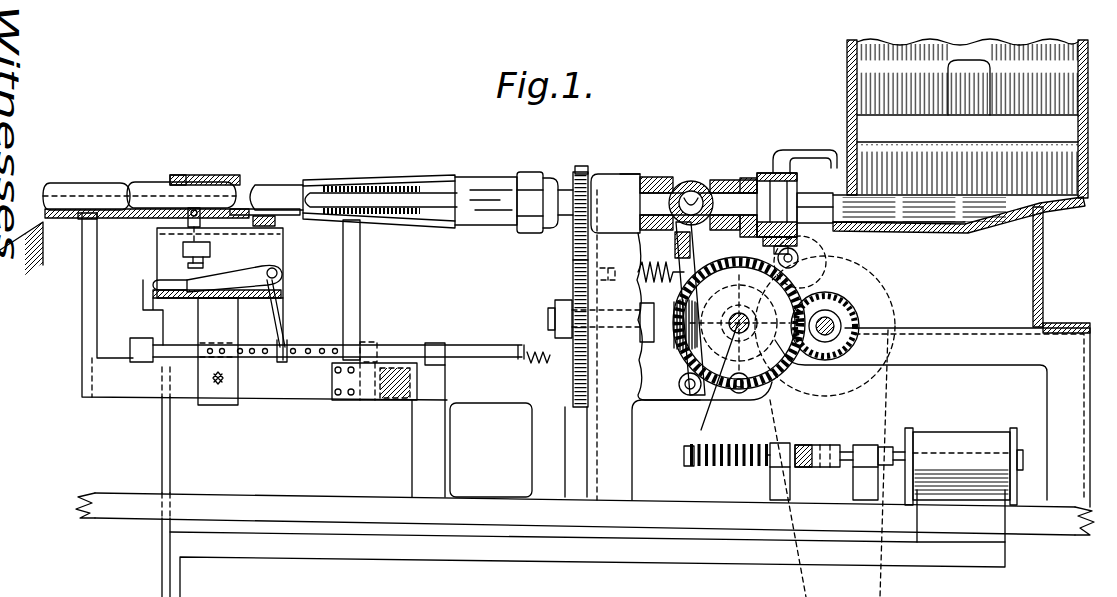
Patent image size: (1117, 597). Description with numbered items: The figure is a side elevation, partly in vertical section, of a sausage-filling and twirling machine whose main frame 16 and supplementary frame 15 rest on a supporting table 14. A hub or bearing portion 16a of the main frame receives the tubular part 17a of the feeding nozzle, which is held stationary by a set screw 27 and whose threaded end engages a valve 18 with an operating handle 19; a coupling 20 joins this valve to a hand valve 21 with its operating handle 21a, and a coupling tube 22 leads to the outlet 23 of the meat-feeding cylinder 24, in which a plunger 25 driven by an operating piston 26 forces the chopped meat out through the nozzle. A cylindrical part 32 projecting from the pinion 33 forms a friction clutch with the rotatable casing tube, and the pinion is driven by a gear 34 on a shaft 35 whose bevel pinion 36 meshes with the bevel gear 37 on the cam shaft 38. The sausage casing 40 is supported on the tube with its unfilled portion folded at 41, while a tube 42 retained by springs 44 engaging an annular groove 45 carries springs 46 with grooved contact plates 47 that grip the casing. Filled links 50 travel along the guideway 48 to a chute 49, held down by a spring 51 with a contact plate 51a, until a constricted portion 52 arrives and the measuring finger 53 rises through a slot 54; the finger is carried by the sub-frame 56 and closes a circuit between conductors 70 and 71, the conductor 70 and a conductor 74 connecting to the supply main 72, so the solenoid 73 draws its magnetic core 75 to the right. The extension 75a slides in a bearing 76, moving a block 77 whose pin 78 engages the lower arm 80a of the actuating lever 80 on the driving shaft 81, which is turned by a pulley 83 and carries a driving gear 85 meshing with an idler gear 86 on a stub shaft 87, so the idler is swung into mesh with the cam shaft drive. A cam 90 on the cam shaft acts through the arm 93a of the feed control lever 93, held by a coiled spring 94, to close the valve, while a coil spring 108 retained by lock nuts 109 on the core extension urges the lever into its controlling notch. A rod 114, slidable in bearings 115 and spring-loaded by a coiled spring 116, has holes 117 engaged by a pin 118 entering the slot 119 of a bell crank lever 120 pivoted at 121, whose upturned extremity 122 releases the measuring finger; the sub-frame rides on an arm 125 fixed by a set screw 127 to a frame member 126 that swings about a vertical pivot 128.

The supporting table 14 is at (330, 497).
The supplementary frame 15 is at (483, 404).
The main frame 16 is at (633, 402).
The hub or bearing portion 16a is at (617, 174).
The tubular part of the feeding tube 17a is at (660, 177).
The valve 18 is at (692, 181).
The operating handle 19 is at (693, 236).
The coupling 20 is at (735, 180).
The hand valve 21 is at (752, 178).
The operating handle 21a is at (800, 150).
The coupling tube 22 is at (797, 178).
The outlet 23 is at (843, 212).
The meat-feeding cylinder 24 is at (1092, 146).
The plunger 25 is at (1030, 130).
The operating piston 26 is at (985, 80).
The set screw 27 is at (632, 174).
The cylindrical part 32 is at (576, 166).
The pinion 33 is at (580, 172).
The gear 34 is at (573, 265).
The shaft 35 is at (555, 320).
The bevel pinion 36 is at (676, 336).
The bevel gear 37 is at (742, 393).
The cam shaft 38 is at (691, 396).
The sausage casing 40 is at (294, 186).
The folded portion of casing 41 is at (371, 188).
The tube 42 is at (481, 177).
The springs 44 is at (530, 172).
The annular groove 45 is at (560, 178).
The springs 46 is at (414, 198).
The contact plates 47 is at (322, 184).
The guideway 48 is at (112, 219).
The chute 49 is at (25, 250).
The sausage links 50 is at (175, 184).
The spring 51 is at (225, 176).
The contact plate 51a is at (203, 176).
The constricted portion of casing 52 is at (262, 216).
The measuring finger 53 is at (190, 213).
The slot 54 is at (246, 210).
The sub-frame 56 is at (143, 300).
The conductor 70 is at (161, 455).
The conductor 71 is at (171, 452).
The supply main 72 is at (136, 596).
The solenoid 73 is at (951, 440).
The conductor 74 is at (940, 567).
The magnetic core 75 is at (900, 452).
The extension of core 75a is at (883, 447).
The bearing 76 is at (772, 470).
The block 77 is at (796, 446).
The pin 78 is at (804, 468).
The actuating lever 80 is at (843, 327).
The lower arm of actuating lever 80a is at (845, 452).
The driving shaft 81 is at (912, 327).
The pulley 83 is at (883, 353).
The driving gear 85 is at (863, 313).
The idler gear 86 is at (810, 245).
The stub shaft 87 is at (798, 258).
The cam 90 is at (738, 258).
The feed control lever 93 is at (677, 292).
The arm of feed control lever 93a is at (715, 405).
The coiled spring 94 is at (668, 267).
The coil spring 108 is at (727, 467).
The lock nuts 109 is at (686, 458).
The rod 114 is at (458, 343).
The bearings 115 is at (433, 343).
The coiled spring 116 is at (540, 352).
The holes 117 is at (311, 343).
The pin 118 is at (277, 346).
The slot 119 is at (279, 362).
The bell crank lever 120 is at (284, 300).
The pivot 121 is at (284, 270).
The upturned extremity 122 is at (190, 285).
The arm 125 is at (212, 325).
The set screw 127 is at (220, 386).
The frame member 126 is at (318, 388).
The vertical pivot 128 is at (392, 398).